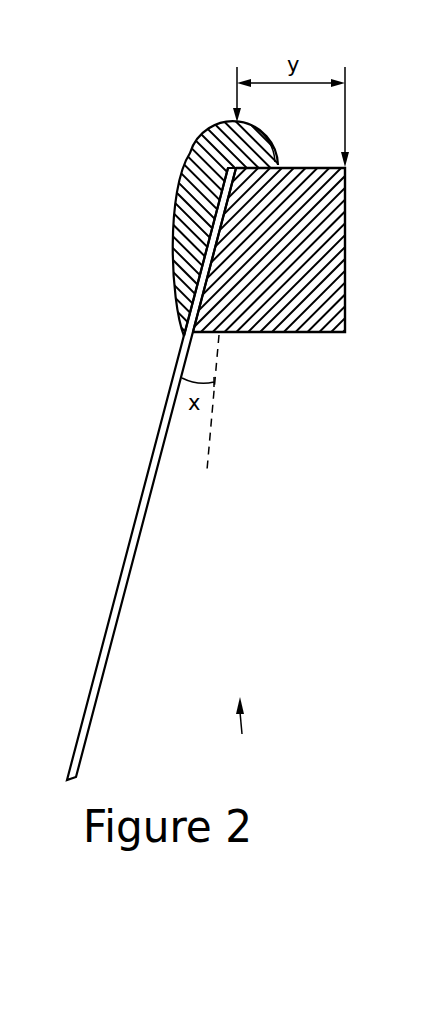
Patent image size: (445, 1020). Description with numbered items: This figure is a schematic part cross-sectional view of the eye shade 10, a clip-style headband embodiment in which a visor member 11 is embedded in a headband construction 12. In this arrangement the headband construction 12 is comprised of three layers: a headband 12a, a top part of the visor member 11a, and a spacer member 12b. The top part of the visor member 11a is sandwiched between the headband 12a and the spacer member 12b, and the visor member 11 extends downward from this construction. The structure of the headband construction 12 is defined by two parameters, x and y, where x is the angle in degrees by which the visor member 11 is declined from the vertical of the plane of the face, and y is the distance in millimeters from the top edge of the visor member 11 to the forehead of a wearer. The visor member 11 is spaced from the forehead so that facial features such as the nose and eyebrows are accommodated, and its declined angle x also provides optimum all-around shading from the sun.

The eye shade 10 is at (242, 729).
The visor member 11 is at (130, 550).
The top part of the visor member 11a is at (203, 258).
The headband construction 12 is at (176, 145).
The headband 12a is at (172, 215).
The spacer member 12b is at (347, 224).